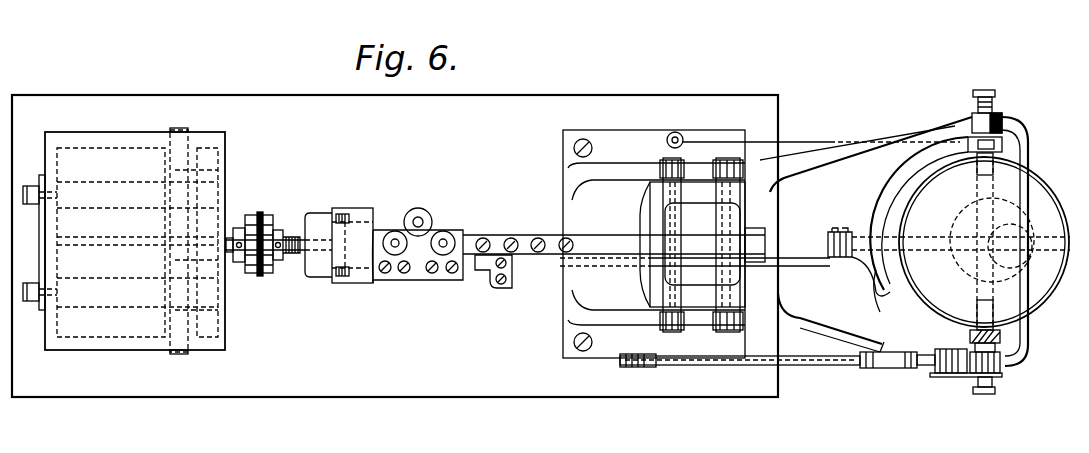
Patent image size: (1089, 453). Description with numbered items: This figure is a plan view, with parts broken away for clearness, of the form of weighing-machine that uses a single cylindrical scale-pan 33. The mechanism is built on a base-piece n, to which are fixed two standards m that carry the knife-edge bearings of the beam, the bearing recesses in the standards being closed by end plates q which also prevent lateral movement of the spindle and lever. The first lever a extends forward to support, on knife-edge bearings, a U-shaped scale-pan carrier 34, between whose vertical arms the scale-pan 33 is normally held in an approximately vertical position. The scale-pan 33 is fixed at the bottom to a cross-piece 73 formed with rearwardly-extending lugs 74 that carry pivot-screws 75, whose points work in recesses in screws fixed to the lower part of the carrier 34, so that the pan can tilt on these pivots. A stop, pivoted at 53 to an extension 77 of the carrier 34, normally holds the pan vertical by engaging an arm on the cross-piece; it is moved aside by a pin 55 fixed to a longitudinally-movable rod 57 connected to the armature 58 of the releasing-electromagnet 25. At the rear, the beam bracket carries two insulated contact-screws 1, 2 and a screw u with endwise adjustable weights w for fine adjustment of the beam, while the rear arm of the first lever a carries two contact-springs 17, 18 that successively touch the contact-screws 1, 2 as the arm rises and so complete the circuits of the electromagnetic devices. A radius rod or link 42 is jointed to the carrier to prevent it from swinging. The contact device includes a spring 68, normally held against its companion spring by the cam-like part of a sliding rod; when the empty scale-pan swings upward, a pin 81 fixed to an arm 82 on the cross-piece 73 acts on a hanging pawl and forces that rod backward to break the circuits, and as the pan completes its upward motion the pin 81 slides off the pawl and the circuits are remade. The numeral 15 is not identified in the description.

The base-piece n is at (395, 246).
The releasing-electromagnet 25 is at (124, 241).
The armature 58 is at (257, 272).
The adjustable weights w is at (261, 215).
The screw u is at (294, 255).
The contact-screw 1 is at (392, 230).
The screw head 15 is at (426, 212).
The contact-screw 2 is at (450, 233).
The contact-spring 17 is at (401, 274).
The contact-spring 18 is at (447, 274).
The rod 57 is at (512, 278).
The first lever a is at (717, 234).
The standards m is at (656, 243).
The end plates q is at (663, 158).
The contact-spring 68 is at (634, 366).
The pin 81 is at (926, 352).
The arm 82 is at (936, 376).
The pivot 53 is at (828, 244).
The pin 55 is at (859, 276).
The extension 77 is at (882, 192).
The radius rod 42 is at (848, 142).
The scale-pan 33 is at (987, 241).
The cross-piece 73 is at (1020, 148).
The lugs 74 is at (1002, 118).
The pivot-screws 75 is at (973, 94).
The scale-pan carrier 34 is at (970, 338).